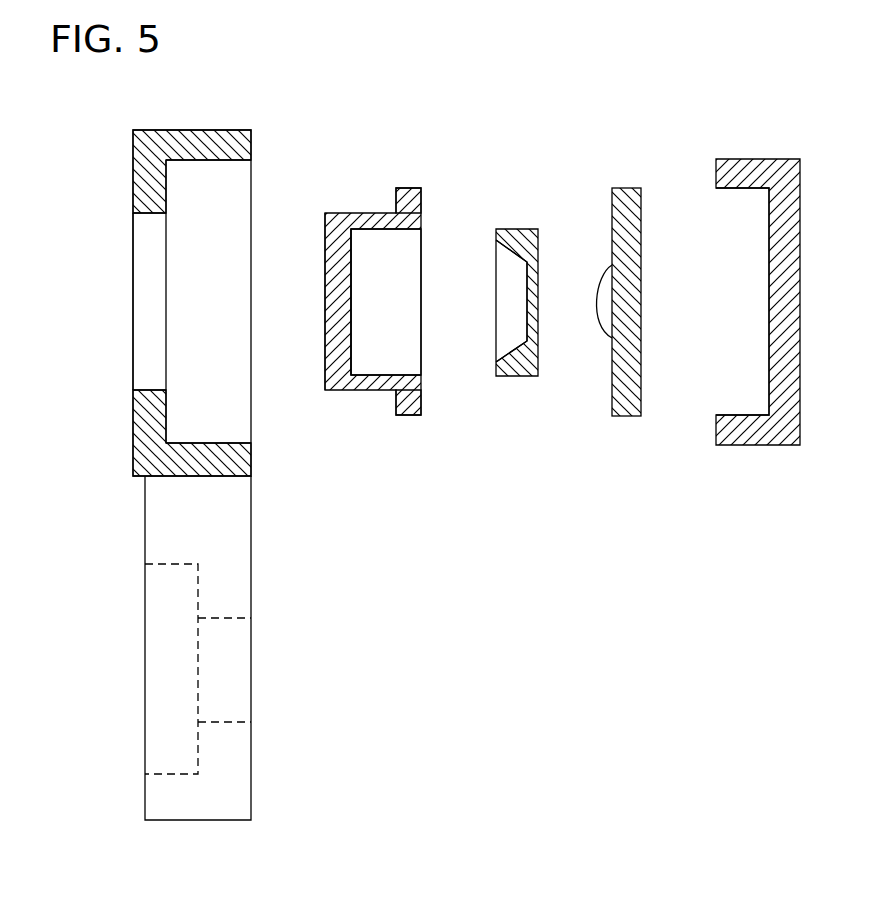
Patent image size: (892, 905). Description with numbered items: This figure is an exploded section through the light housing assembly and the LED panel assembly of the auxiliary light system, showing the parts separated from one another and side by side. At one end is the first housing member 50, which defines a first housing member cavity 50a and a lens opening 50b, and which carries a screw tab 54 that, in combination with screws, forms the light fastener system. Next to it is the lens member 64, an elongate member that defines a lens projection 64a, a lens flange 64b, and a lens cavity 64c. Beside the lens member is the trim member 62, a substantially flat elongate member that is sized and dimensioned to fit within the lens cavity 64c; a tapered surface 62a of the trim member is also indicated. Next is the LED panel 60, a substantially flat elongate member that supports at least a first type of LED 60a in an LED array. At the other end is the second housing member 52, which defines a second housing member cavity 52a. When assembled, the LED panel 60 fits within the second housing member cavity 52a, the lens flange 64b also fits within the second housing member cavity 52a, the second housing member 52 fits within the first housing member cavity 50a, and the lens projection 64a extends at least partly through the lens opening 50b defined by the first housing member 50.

The first housing member 50 is at (211, 126).
The first housing member cavity 50a is at (188, 258).
The lens opening 50b is at (147, 303).
The screw tab 54 is at (165, 618).
The lens member 64 is at (410, 184).
The lens projection 64a is at (332, 283).
The lens flange 64b is at (398, 203).
The lens cavity 64c is at (368, 305).
The trim member 62 is at (518, 226).
The tapered opening of seal member 62a is at (506, 290).
The LED panel 60 is at (632, 184).
The first type of LED 60a is at (600, 304).
The second housing member 52 is at (778, 156).
The second housing member cavity 52a is at (731, 290).